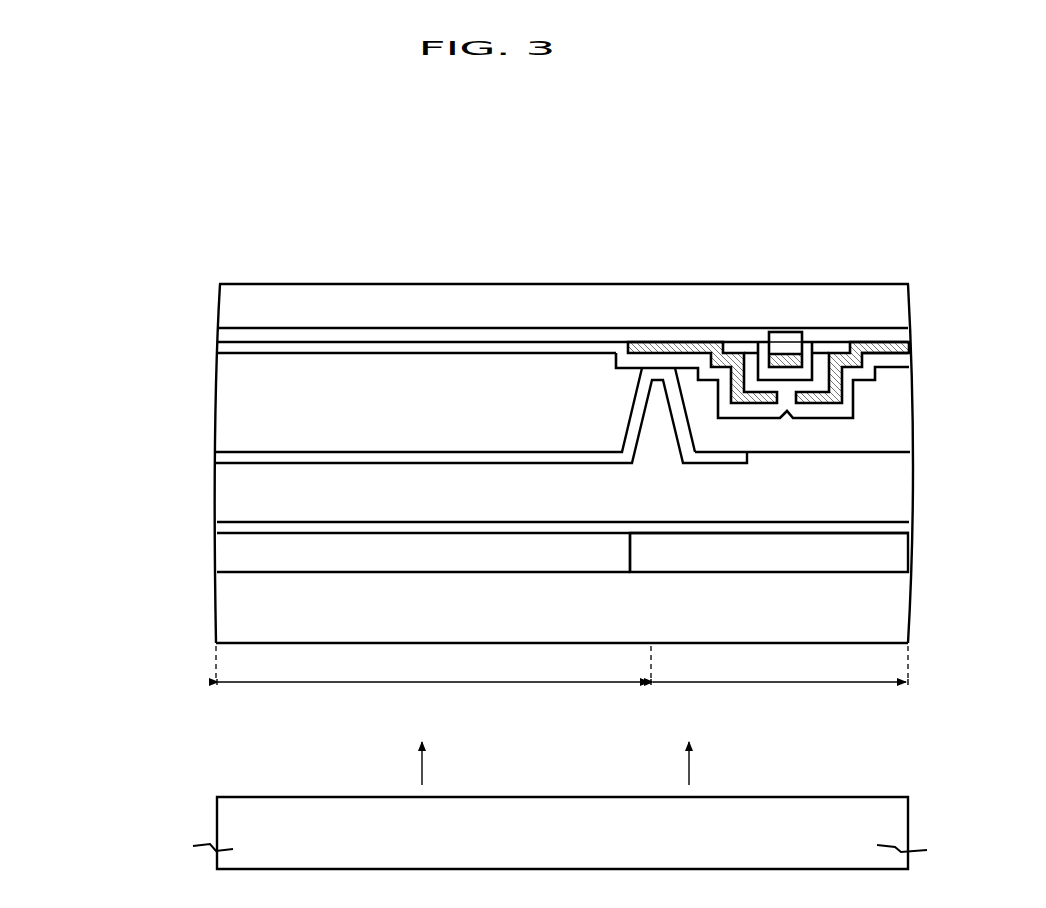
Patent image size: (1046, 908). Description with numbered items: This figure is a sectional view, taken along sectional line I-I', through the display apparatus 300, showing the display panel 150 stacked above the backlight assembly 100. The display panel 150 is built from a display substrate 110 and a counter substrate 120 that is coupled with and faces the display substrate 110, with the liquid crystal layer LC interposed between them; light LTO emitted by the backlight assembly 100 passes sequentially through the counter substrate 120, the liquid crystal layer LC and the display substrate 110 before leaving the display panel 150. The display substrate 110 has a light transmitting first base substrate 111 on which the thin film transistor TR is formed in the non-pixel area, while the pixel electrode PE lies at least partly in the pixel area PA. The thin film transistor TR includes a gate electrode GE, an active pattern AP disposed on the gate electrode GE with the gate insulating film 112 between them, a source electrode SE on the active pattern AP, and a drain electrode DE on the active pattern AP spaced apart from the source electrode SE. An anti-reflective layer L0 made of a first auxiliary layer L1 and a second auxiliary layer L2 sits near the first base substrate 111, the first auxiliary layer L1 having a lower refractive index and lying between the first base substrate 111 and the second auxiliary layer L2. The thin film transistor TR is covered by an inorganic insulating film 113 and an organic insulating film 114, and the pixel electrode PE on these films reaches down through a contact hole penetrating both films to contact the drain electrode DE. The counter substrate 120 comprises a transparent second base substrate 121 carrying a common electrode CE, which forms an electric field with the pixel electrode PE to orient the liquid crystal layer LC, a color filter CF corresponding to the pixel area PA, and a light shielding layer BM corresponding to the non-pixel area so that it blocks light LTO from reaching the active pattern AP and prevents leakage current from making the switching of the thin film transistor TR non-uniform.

The display apparatus 300 is at (272, 176).
The display panel 150 is at (110, 363).
The display substrate 110 is at (160, 292).
The counter substrate 120 is at (160, 515).
The first base substrate 111 is at (232, 300).
The gate insulating film 112 is at (230, 327).
The inorganic insulating film 113 is at (230, 348).
The organic insulating film 114 is at (232, 410).
The pixel electrode PE is at (230, 457).
The liquid crystal layer LC is at (230, 490).
The common electrode CE is at (230, 528).
The color filter CF is at (230, 553).
The light shielding layer BM is at (752, 565).
The second base substrate 121 is at (230, 606).
The thin film transistor TR is at (652, 174).
The drain electrode DE is at (669, 345).
The active pattern AP is at (738, 347).
The gate electrode GE is at (797, 362).
The source electrode SE is at (874, 347).
The anti-reflective layer L0 is at (740, 238).
The first auxiliary layer L1 is at (793, 336).
The second auxiliary layer L2 is at (782, 345).
The light LTO is at (422, 767).
The pixel area PA is at (434, 678).
The sectional line end point I is at (208, 662).
The sectional line end point I' is at (916, 662).
The backlight assembly 100 is at (230, 820).